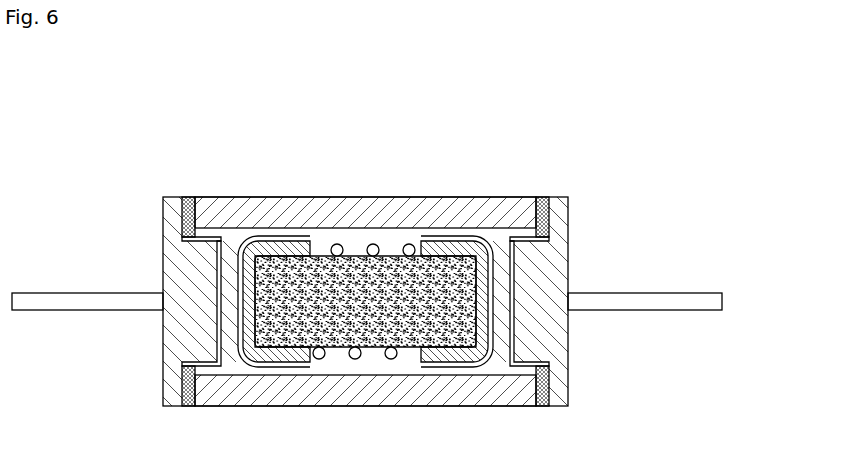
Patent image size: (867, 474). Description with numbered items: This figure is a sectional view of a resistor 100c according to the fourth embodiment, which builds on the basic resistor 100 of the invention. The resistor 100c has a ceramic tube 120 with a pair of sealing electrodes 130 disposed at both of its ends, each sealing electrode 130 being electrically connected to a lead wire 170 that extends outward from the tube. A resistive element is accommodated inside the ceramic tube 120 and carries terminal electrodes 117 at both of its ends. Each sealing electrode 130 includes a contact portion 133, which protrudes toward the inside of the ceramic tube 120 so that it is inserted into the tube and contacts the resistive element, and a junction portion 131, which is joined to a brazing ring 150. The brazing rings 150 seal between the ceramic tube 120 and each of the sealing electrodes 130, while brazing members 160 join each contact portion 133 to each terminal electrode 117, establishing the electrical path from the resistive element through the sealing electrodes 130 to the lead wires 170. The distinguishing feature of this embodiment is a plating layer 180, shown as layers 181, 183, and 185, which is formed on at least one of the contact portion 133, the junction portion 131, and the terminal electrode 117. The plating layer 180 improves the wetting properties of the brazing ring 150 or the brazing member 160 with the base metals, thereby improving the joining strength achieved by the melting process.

The resistor 100c is at (117, 63).
The resistor 100 is at (332, 359).
The terminal electrode 117 is at (272, 368).
The ceramic tube 120 is at (383, 196).
The sealing electrode 130 is at (80, 218).
The junction portion 131 is at (173, 215).
The contact portion 133 is at (217, 243).
The brazing ring 150 is at (197, 198).
The brazing member 160 is at (239, 237).
The lead wire 170 is at (632, 306).
The plating layer 180 is at (93, 318).
The plating layer 181 is at (180, 378).
The plating layer 183 is at (216, 330).
The plating layer 185 is at (222, 299).